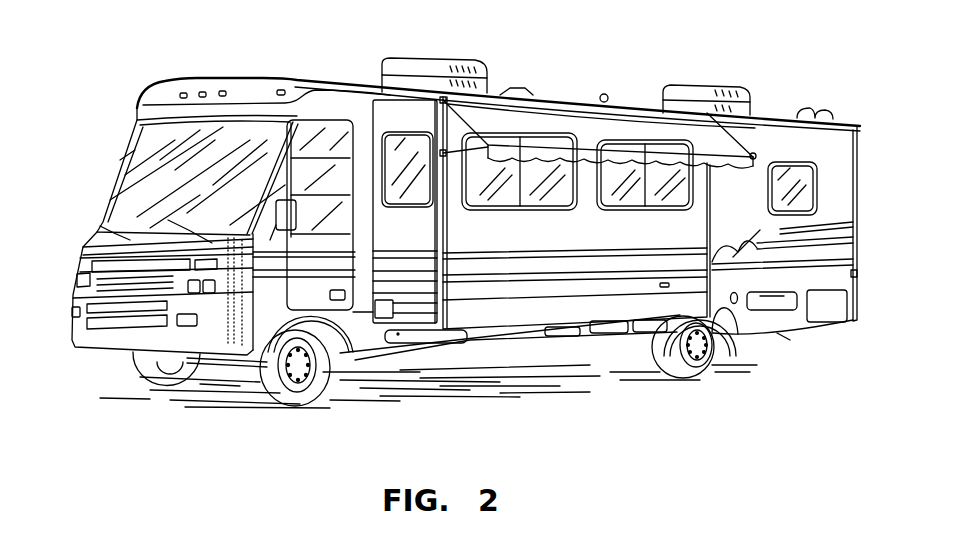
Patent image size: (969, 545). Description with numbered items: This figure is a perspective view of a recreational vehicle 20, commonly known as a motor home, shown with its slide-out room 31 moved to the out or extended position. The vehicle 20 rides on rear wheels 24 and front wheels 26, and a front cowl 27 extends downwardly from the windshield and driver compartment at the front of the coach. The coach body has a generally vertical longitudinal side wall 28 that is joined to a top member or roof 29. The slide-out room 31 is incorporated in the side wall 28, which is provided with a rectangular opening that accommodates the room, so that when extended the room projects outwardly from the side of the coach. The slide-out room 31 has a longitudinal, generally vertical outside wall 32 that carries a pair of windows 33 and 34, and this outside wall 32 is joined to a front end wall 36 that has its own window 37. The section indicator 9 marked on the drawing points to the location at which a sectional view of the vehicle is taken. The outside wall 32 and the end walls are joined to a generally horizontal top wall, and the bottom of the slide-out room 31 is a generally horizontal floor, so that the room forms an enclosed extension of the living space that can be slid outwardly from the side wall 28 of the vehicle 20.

The recreational vehicle 20 is at (789, 109).
The rear wheels 24 is at (690, 376).
The front wheels 26 is at (288, 408).
The front cowl 27 is at (103, 240).
The side wall 28 is at (823, 150).
The roof 29 is at (572, 99).
The slide-out room 31 is at (506, 328).
The outside wall 32 is at (607, 287).
The window 33 is at (533, 172).
The window 34 is at (623, 173).
The front end wall 36 is at (398, 122).
The window 37 is at (407, 170).
The section line for FIG. 9 is at (363, 307).